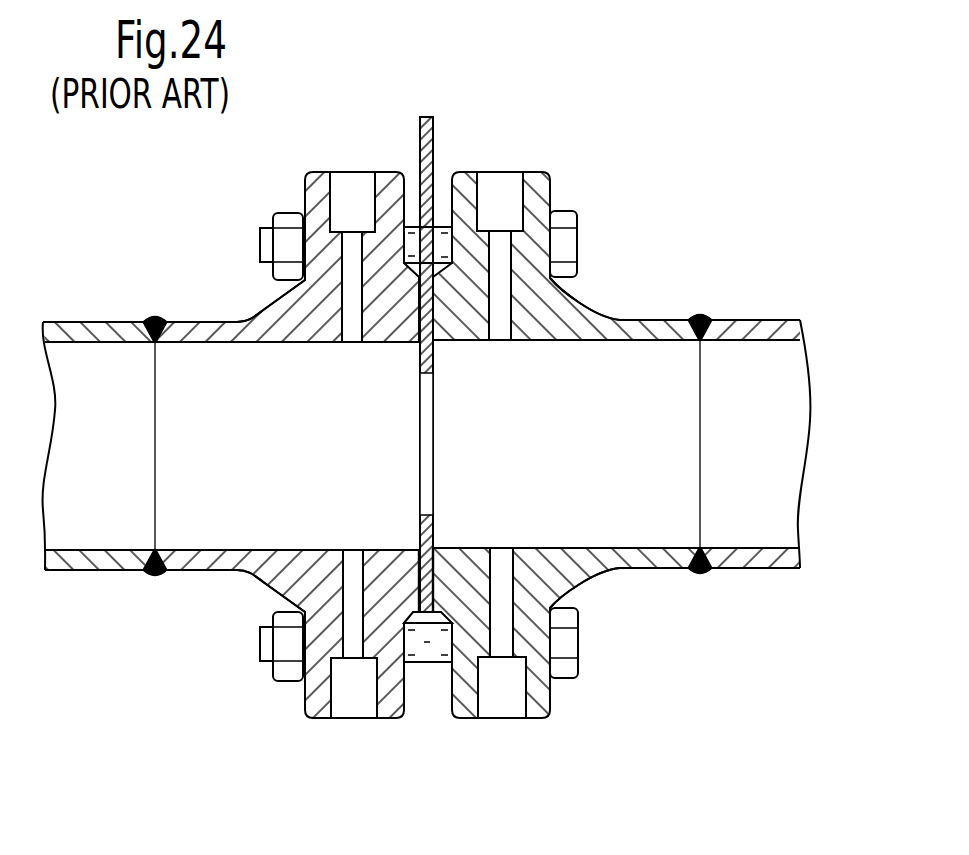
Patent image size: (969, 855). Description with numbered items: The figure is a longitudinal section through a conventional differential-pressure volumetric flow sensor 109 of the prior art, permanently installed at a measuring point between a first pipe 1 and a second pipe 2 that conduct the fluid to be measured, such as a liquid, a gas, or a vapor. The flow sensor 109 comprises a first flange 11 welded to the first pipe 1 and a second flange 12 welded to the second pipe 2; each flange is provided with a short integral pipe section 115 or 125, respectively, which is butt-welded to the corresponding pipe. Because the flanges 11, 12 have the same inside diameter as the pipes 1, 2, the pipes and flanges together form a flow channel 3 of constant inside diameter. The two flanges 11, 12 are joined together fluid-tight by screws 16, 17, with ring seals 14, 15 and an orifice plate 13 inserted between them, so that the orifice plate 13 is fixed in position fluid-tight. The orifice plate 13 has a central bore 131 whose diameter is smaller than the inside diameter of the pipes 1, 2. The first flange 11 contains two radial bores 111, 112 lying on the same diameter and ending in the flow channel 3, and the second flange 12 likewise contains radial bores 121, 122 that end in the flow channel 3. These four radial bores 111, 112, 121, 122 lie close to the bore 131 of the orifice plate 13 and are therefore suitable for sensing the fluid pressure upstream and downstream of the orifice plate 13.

The first pipe 1 is at (84, 322).
The second pipe 2 is at (770, 320).
The flow channel 3 is at (793, 390).
The first flange 11 is at (312, 190).
The second flange 12 is at (550, 180).
The orifice plate 13 is at (434, 118).
The ring seal 14 is at (411, 549).
The ring seal 15 is at (443, 549).
The screw 16 is at (567, 215).
The screw 17 is at (577, 672).
The flow sensor 109 is at (626, 268).
The radial bore 111 is at (363, 185).
The radial bore 112 is at (350, 702).
The short integral pipe section 115 is at (221, 322).
The radial bore 121 is at (512, 182).
The radial bore 122 is at (507, 698).
The short integral pipe section 125 is at (663, 320).
The central bore 131 is at (432, 420).